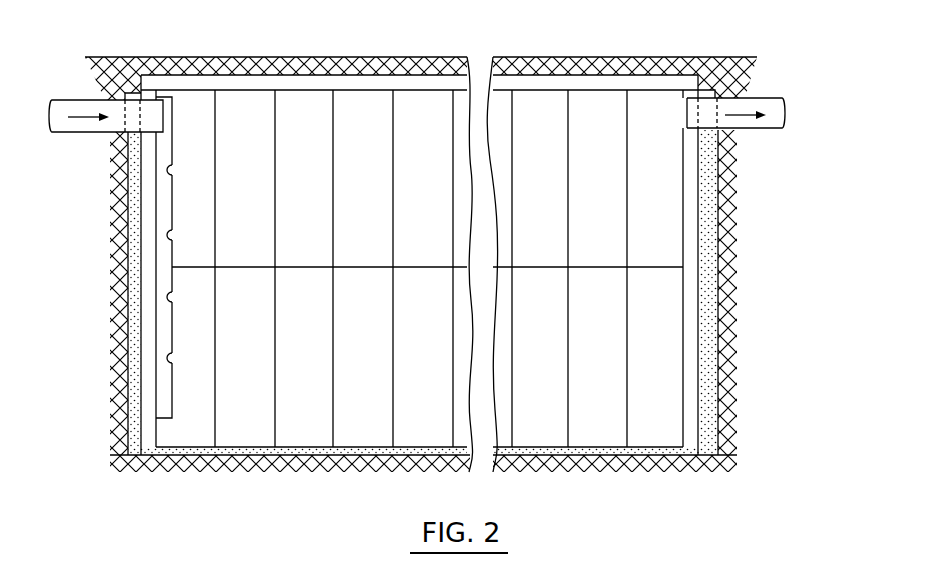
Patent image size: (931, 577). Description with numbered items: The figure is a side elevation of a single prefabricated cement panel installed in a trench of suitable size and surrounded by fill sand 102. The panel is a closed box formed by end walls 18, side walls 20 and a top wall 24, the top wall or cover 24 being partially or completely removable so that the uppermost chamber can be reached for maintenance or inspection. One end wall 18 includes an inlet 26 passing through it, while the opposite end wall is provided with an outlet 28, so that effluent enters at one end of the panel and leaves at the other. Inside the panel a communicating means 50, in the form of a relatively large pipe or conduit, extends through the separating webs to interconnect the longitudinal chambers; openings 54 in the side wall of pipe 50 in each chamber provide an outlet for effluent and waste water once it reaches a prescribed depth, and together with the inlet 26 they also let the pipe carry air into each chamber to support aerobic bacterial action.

The end wall 18 is at (690, 283).
The side wall 20 is at (373, 310).
The top wall 24 is at (407, 84).
The inlet 26 is at (72, 101).
The outlet 28 is at (763, 99).
The communicating means 50 is at (173, 273).
The openings 54 is at (174, 175).
The fill sand 102 is at (130, 226).